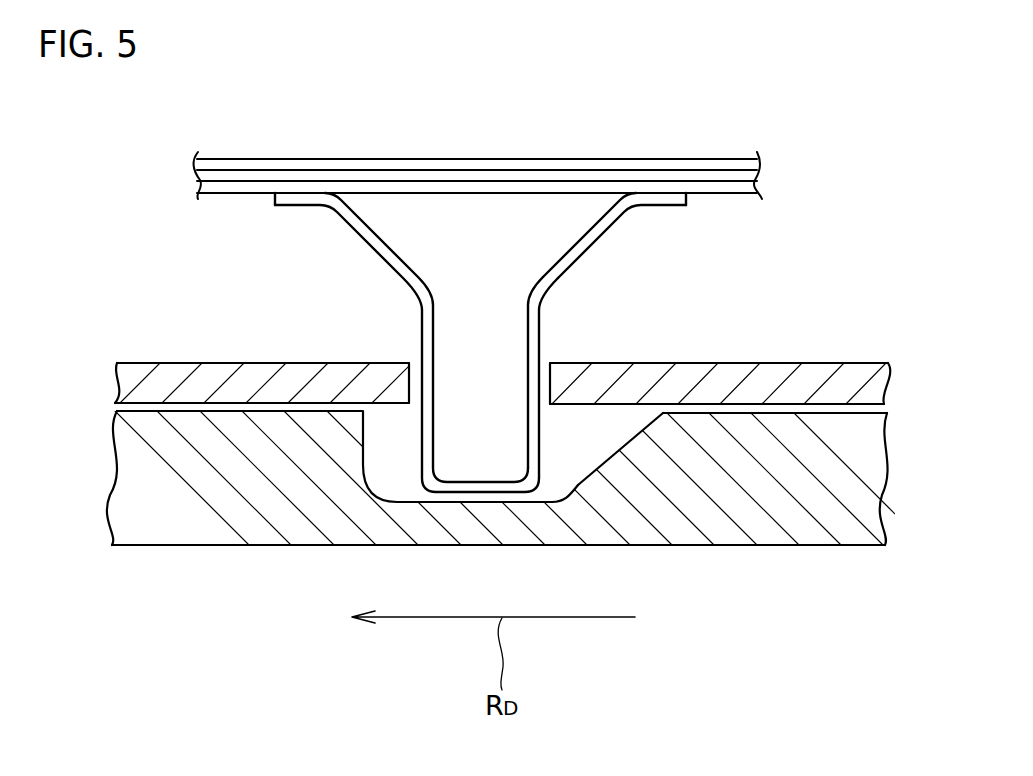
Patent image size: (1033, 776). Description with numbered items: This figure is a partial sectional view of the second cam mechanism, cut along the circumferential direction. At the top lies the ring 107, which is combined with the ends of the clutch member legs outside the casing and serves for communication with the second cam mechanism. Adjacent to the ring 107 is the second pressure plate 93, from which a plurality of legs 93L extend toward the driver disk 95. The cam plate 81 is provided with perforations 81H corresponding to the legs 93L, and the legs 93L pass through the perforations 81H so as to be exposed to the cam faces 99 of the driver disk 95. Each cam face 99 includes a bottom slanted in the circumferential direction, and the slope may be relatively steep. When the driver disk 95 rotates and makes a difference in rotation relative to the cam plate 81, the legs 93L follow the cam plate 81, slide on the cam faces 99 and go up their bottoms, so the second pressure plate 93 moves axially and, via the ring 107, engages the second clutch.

The ring 107 is at (582, 158).
The second pressure plate 93 is at (712, 197).
The legs 93L is at (541, 323).
The cam plate 81 is at (183, 362).
The perforations 81H is at (414, 382).
The driver disk 95 is at (203, 546).
The cam faces 99 is at (630, 455).